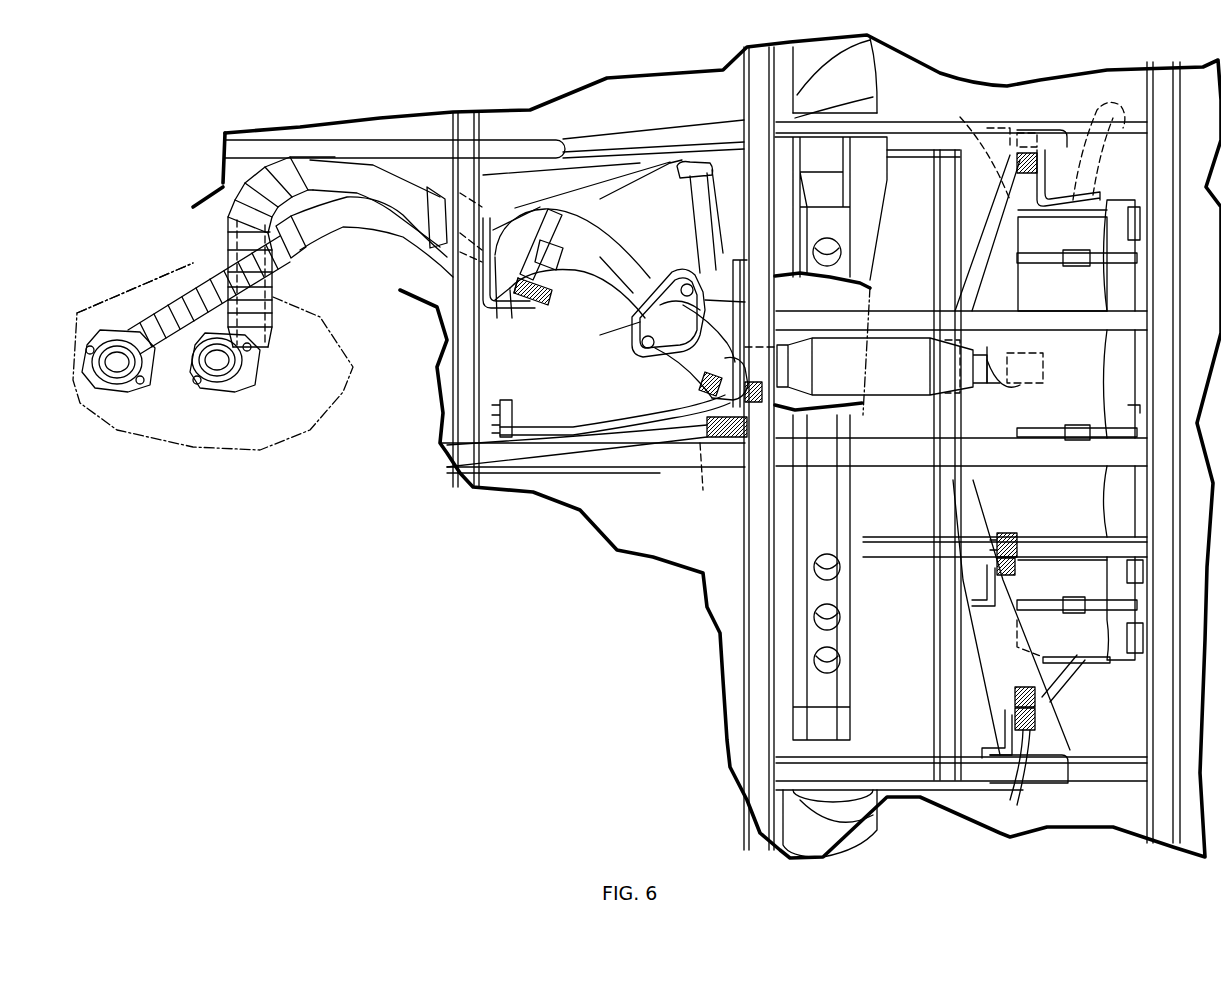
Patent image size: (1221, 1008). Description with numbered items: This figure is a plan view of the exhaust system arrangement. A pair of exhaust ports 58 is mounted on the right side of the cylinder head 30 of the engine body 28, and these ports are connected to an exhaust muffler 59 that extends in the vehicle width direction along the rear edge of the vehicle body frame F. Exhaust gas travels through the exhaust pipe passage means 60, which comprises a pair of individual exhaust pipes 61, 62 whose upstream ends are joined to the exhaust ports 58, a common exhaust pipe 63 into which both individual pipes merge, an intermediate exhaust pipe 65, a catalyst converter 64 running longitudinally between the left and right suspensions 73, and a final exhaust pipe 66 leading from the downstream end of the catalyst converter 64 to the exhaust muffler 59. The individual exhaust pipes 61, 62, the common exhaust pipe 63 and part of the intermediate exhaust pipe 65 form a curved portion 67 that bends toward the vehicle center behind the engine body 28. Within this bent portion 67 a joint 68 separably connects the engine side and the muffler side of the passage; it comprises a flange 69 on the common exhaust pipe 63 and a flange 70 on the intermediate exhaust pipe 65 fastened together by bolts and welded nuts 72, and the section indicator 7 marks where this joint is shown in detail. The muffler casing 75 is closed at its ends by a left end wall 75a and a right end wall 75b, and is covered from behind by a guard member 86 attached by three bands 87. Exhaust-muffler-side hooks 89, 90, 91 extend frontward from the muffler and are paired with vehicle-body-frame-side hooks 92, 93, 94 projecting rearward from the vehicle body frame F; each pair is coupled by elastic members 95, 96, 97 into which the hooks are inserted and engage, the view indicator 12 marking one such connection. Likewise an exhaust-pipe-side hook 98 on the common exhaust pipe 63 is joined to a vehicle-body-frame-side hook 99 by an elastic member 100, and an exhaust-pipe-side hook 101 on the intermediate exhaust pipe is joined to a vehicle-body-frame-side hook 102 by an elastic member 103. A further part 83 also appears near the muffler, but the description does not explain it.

The engine body 28 is at (203, 450).
The cylinder head 30 is at (163, 275).
The exhaust ports 58 is at (143, 373).
The exhaust muffler 59 is at (1013, 289).
The exhaust pipe passage means 60 is at (417, 177).
The individual exhaust pipe 61 is at (333, 227).
The individual exhaust pipe 62 is at (333, 172).
The common exhaust pipe 63 is at (613, 260).
The catalyst converter 64 is at (910, 383).
The intermediate exhaust pipe 65 is at (680, 347).
The final exhaust pipe 66 is at (987, 370).
The curved portion 67 is at (590, 243).
The joint 68 is at (707, 307).
The flange 69 is at (620, 330).
The flange 70 is at (673, 303).
The welded nuts 72 is at (697, 283).
The suspensions 73 is at (860, 105).
The casing 75 is at (1100, 303).
The left end wall 75a is at (1080, 655).
The right end wall 75b is at (1030, 207).
The drain hose 83 is at (1100, 113).
The guard member 86 is at (1123, 513).
The bands 87 is at (1033, 262).
The exhaust-muffler-side hook 89 is at (997, 547).
The exhaust-muffler-side hook 90 is at (1060, 680).
The exhaust-muffler-side hook 91 is at (1040, 187).
The vehicle-body-frame-side hook 92 is at (1017, 563).
The vehicle-body-frame-side hook 93 is at (1037, 713).
The vehicle-body-frame-side hook 94 is at (1050, 150).
The elastic member 95 is at (1013, 593).
The elastic member 96 is at (1023, 730).
The elastic member 97 is at (1027, 133).
The exhaust-pipe-side hook 98 is at (527, 260).
The vehicle-body-frame-side hook 99 is at (487, 310).
The elastic member 100 is at (547, 303).
The exhaust-pipe-side hook 101 is at (752, 408).
The vehicle-body-frame-side hook 102 is at (703, 470).
The elastic member 103 is at (700, 420).
The side cover 12 is at (950, 490).
The section line 7 is at (630, 288).
The vehicle body frame F is at (740, 623).